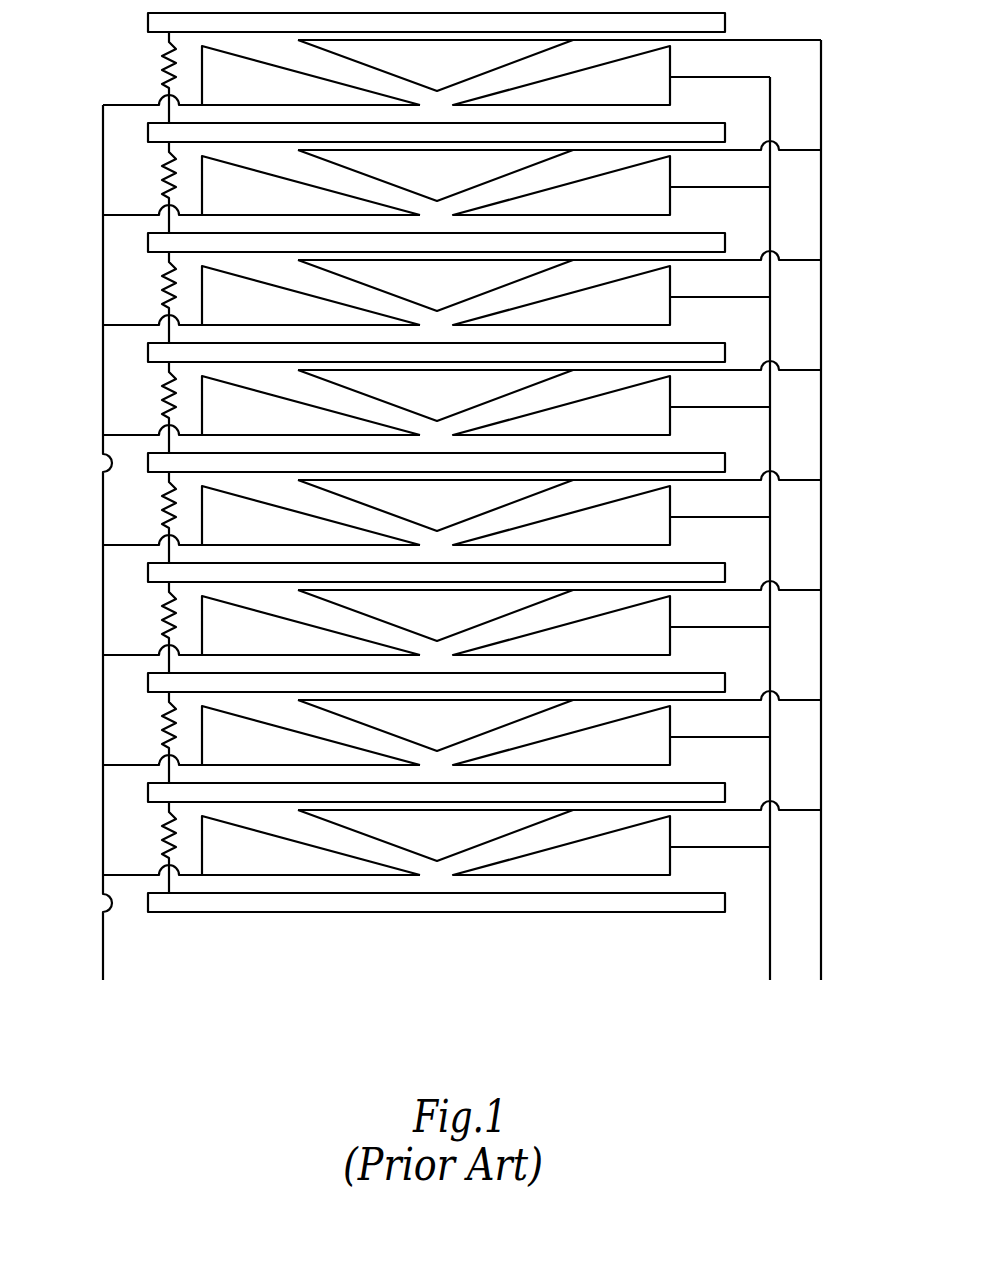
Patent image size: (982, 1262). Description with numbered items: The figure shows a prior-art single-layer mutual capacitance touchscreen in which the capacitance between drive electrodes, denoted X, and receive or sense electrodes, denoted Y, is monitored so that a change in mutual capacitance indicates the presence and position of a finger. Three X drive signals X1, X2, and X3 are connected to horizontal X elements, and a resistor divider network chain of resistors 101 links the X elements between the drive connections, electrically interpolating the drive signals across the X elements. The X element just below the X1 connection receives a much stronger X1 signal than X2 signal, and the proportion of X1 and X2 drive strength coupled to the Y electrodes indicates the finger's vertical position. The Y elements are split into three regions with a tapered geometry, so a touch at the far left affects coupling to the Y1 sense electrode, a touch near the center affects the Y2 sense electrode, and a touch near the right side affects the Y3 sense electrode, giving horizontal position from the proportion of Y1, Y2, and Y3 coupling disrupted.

The resistors 101 is at (163, 63).
The X drive signal X1 is at (148, 22).
The X drive signal X2 is at (148, 463).
The X drive signal X3 is at (148, 903).
The Y1 sense electrode Y1 is at (103, 558).
The Y2 sense electrode Y2 is at (821, 525).
The Y3 sense electrode Y3 is at (769, 544).